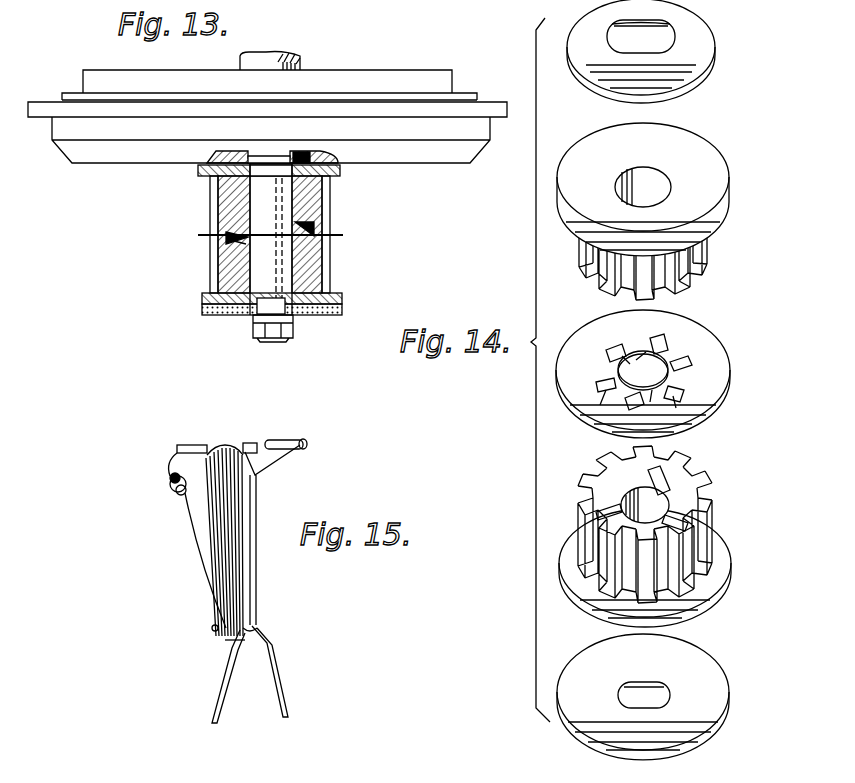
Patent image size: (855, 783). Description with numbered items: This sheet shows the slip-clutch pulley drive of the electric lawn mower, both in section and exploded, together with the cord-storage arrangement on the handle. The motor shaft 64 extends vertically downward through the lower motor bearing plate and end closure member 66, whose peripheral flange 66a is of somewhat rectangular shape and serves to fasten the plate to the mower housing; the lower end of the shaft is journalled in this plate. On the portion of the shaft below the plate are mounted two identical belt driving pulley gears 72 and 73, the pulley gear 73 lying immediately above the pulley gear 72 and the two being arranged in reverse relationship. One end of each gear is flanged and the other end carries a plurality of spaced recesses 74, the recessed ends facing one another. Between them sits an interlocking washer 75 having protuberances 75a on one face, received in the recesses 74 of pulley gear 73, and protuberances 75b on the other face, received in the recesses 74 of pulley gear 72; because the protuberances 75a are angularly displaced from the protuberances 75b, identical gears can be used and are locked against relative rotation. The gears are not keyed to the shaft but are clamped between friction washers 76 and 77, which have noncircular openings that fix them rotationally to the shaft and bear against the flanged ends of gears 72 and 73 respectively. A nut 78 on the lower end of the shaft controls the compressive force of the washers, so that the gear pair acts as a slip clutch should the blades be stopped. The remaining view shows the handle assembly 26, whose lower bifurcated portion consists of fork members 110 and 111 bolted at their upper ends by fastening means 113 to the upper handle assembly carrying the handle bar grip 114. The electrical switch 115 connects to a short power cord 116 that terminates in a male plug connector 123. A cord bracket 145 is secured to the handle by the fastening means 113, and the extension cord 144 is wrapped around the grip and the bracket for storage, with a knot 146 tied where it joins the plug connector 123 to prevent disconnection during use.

In FIG. 13, the motor shaft 64 is at (285, 55).
In FIG. 13, the lower motor bearing plate and end closure member 66 is at (97, 155).
In FIG. 13, the peripheral flange 66a is at (487, 100).
In FIG. 13, the belt driving pulley gear 72 is at (325, 272).
In FIG. 14, the belt driving pulley gear 72 is at (705, 540).
In FIG. 13, the belt driving pulley gear 73 is at (222, 192).
In FIG. 14, the belt driving pulley gear 73 is at (700, 256).
In FIG. 13, the spaced recesses 74 is at (298, 222).
In FIG. 14, the spaced recesses 74 is at (598, 497).
In FIG. 13, the interlocking washer 75 is at (345, 235).
In FIG. 14, the interlocking washer 75 is at (718, 365).
In FIG. 13, the protuberances 75a is at (320, 219).
In FIG. 14, the protuberances 75a is at (690, 360).
In FIG. 13, the protuberances 75b is at (223, 255).
In FIG. 14, the protuberances 75b is at (660, 340).
In FIG. 13, the friction washer 76 is at (203, 302).
In FIG. 14, the friction washer 76 is at (685, 658).
In FIG. 13, the friction washer 77 is at (305, 162).
In FIG. 14, the friction washer 77 is at (692, 64).
In FIG. 13, the nut 78 is at (250, 318).
In FIG. 15, the handle assembly 26 is at (216, 664).
In FIG. 15, the fork member 110 is at (283, 690).
In FIG. 15, the fork member 111 is at (212, 710).
In FIG. 15, the fastening means 113 is at (258, 616).
In FIG. 15, the handle bar grip 114 is at (208, 447).
In FIG. 15, the electrical switch 115 is at (262, 437).
In FIG. 15, the power cord 116 is at (176, 456).
In FIG. 15, the male type plug connector 123 is at (174, 492).
In FIG. 15, the extension cord 144 is at (206, 576).
In FIG. 15, the cord bracket 145 is at (212, 628).
In FIG. 15, the knot 146 is at (170, 478).